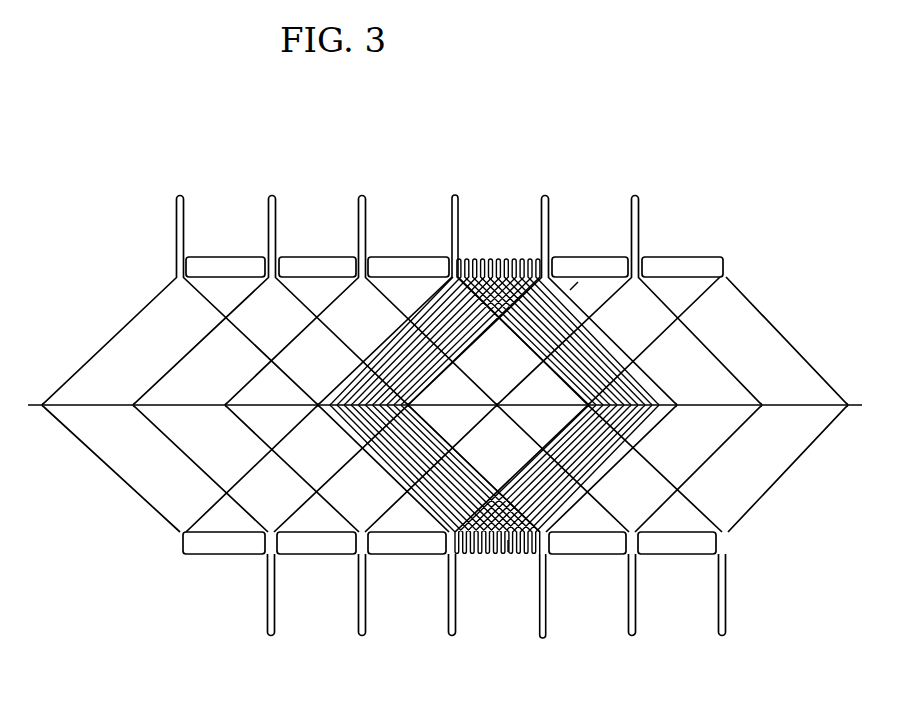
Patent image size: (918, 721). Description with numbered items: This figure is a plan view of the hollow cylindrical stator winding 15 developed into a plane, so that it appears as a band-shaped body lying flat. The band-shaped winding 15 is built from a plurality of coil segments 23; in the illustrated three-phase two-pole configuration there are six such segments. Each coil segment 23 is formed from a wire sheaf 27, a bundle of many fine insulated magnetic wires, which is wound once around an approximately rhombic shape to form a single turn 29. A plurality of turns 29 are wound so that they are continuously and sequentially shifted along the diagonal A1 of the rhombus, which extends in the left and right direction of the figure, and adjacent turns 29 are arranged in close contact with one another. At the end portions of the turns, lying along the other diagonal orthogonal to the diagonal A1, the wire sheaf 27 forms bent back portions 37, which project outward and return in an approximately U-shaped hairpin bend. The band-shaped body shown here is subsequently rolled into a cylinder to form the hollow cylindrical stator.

The stator winding 15 is at (222, 188).
The coil segment 23 is at (318, 257).
The wire sheaf 27 is at (547, 592).
The single turn 29 is at (597, 312).
The bent back portion 37 is at (531, 556).
The diagonal A1 is at (803, 404).